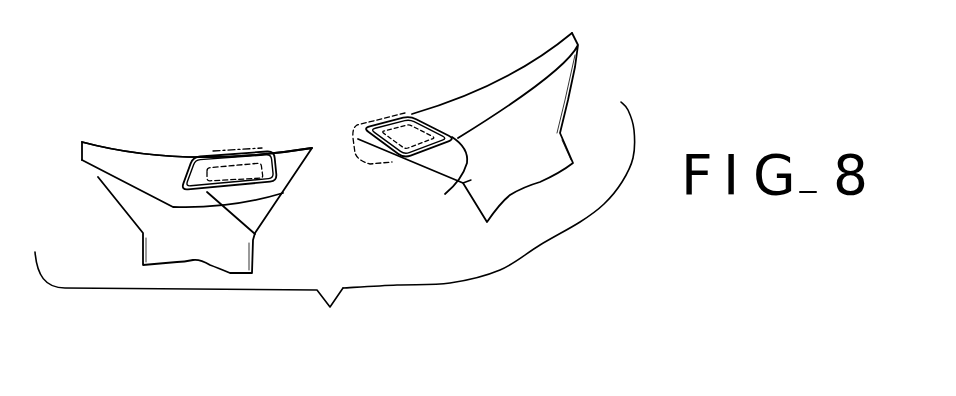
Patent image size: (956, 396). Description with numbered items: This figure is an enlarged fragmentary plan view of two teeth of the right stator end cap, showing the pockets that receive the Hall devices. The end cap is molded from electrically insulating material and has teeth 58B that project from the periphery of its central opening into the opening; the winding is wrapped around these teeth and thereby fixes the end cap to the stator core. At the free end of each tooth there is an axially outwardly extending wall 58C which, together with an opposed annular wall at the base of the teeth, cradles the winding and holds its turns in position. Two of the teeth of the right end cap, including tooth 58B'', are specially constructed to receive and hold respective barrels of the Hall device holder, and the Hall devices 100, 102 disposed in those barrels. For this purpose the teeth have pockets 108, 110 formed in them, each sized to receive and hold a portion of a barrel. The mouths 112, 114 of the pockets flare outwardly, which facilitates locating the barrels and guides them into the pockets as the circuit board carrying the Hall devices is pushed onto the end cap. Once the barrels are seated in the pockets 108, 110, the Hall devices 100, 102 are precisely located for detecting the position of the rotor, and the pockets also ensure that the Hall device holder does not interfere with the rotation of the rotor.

The tooth 58B is at (180, 207).
The tooth 58B'' is at (522, 127).
The axially outwardly extending wall 58C is at (105, 155).
The Hall device 100 is at (262, 160).
The Hall device 102 is at (355, 124).
The pocket 108 is at (197, 177).
The pocket 110 is at (430, 133).
The mouth 112 is at (256, 234).
The mouth 114 is at (445, 194).